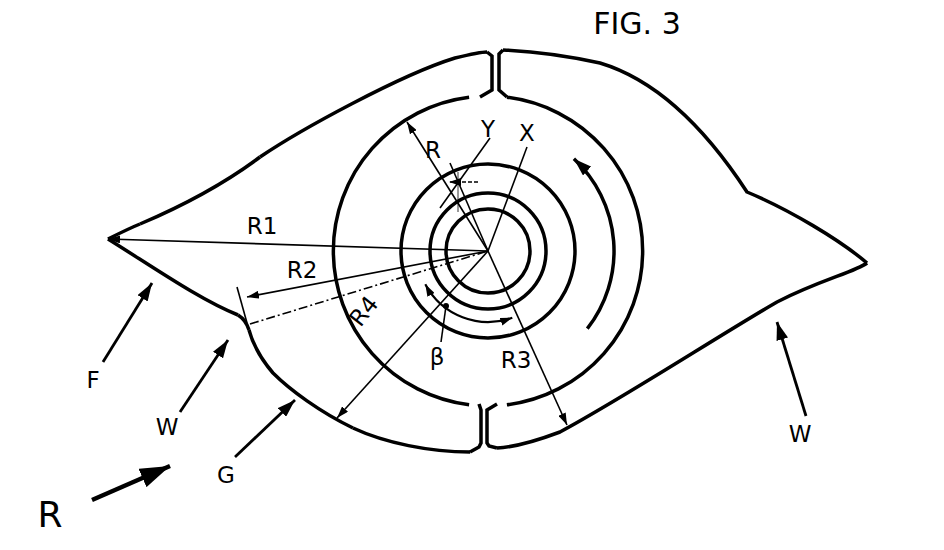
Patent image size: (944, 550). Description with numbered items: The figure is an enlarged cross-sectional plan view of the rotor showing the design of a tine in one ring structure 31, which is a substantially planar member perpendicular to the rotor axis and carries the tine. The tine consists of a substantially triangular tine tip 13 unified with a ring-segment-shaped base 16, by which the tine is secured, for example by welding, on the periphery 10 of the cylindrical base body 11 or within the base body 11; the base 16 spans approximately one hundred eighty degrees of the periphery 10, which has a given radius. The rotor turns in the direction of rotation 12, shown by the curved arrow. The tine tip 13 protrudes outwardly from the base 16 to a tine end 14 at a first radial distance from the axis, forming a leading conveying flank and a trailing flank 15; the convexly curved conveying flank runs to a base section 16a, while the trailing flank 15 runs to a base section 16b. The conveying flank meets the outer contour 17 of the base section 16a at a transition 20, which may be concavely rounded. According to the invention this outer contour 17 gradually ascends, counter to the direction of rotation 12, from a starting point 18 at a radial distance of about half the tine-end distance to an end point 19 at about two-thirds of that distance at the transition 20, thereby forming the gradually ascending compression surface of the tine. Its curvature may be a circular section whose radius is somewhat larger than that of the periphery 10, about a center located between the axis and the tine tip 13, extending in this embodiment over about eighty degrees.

The base body periphery 10 is at (645, 251).
The base body 11 is at (628, 268).
The direction of rotation 12 is at (612, 237).
The tine tip 13 is at (174, 229).
The tine end 14 is at (108, 239).
The trailing flank 15 is at (217, 188).
The base 16 is at (390, 447).
The base section 16a is at (451, 421).
The base section 16b is at (455, 82).
The outer contour 17 is at (343, 422).
The starting point 18 is at (576, 428).
The end point 19 is at (246, 322).
The transition 20 is at (252, 323).
The ring structure 31 is at (253, 130).